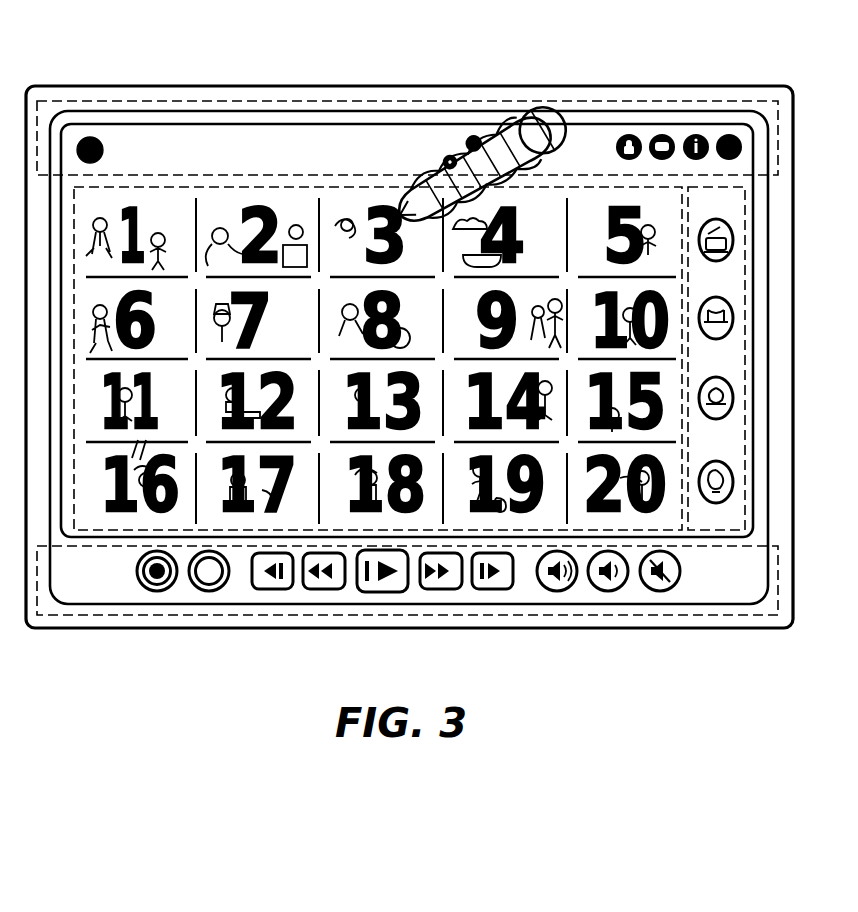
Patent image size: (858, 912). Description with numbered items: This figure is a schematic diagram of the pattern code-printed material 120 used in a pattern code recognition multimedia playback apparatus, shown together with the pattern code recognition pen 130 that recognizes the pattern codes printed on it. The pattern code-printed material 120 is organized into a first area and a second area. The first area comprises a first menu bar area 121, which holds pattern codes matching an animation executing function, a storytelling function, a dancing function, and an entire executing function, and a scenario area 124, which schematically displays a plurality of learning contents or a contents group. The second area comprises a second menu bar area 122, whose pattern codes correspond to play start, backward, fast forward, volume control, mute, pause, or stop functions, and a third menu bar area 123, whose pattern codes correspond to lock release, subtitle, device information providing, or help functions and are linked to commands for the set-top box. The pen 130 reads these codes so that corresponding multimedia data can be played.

The pattern code-printed material 120 is at (88, 86).
The first menu bar area 121 is at (745, 240).
The second menu bar area 122 is at (778, 576).
The third menu bar area 123 is at (778, 134).
The scenario area 124 is at (545, 532).
The pattern code recognition pen 130 is at (518, 108).